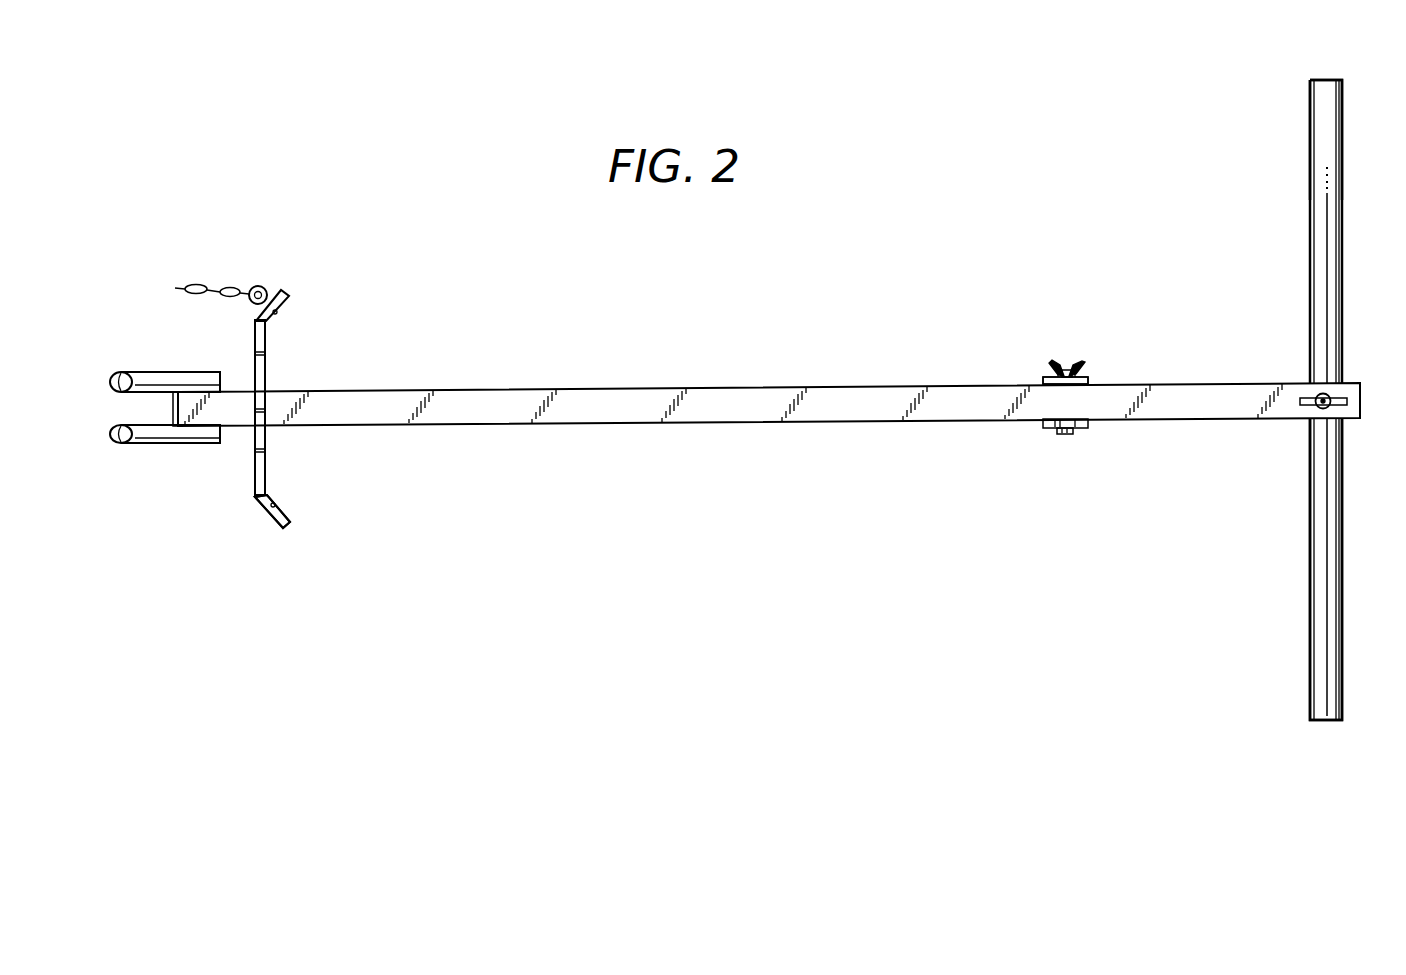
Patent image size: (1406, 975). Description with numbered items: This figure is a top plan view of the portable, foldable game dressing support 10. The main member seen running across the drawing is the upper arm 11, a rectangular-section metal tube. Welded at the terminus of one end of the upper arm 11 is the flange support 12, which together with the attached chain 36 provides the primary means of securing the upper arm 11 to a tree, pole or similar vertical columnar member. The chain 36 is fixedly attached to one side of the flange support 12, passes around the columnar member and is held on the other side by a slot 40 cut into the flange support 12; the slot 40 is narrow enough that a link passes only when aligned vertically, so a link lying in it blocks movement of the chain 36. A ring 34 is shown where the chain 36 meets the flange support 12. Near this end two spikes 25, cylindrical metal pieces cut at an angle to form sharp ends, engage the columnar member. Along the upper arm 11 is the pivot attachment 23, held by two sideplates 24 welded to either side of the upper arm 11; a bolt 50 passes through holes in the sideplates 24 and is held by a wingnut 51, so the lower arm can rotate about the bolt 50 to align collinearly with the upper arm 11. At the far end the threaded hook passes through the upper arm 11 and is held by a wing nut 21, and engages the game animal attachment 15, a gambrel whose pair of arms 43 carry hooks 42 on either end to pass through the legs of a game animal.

The game dressing support 10 is at (1072, 205).
The upper arm 11 is at (723, 360).
The flange support 12 is at (300, 458).
The game animal attachment 15 is at (1357, 193).
The wing nut 21 is at (1347, 400).
The pivot attachment 23 is at (1083, 468).
The sideplates 24 is at (1087, 378).
The spikes 25 is at (150, 373).
The attachment ring 34 is at (267, 290).
The chain 36 is at (215, 285).
The slot 40 is at (267, 508).
The hooks 42 is at (1325, 82).
The arms 43 is at (1342, 540).
The bolt 50 is at (1062, 433).
The wingnut 51 is at (1053, 362).